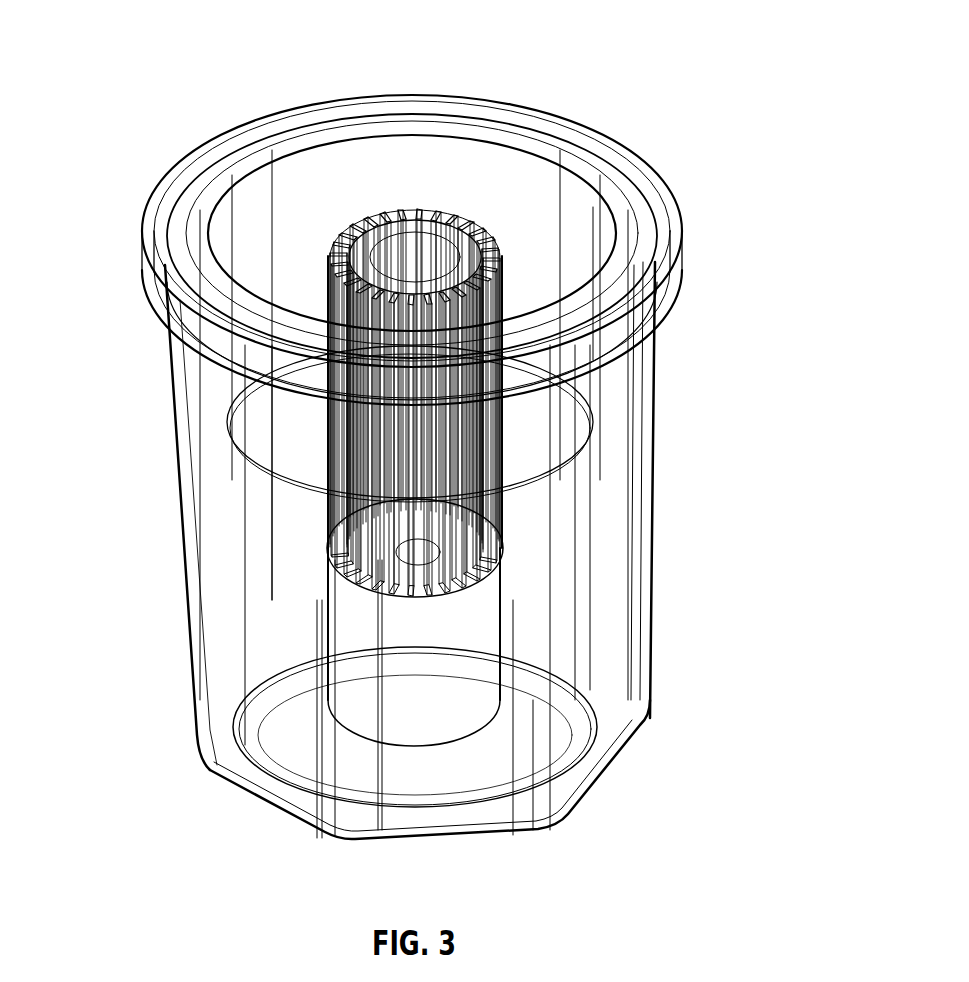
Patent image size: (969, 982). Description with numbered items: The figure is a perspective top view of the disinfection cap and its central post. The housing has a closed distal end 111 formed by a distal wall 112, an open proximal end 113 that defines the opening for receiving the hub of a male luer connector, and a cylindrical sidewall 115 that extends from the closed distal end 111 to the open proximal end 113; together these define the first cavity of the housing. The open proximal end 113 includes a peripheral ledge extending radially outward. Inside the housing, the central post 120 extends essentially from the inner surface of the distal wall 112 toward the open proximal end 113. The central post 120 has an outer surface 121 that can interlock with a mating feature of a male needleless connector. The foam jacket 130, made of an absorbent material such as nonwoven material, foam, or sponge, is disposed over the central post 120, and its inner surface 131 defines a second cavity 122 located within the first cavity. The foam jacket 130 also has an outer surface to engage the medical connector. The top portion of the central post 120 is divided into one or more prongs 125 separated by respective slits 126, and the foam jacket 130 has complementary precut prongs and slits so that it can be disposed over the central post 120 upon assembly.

The closed distal end 111 is at (212, 772).
The distal wall 112 is at (215, 727).
The open proximal end 113 is at (168, 205).
The sidewall 115 is at (183, 548).
The central post 120 is at (503, 648).
The outer surface 121 is at (450, 723).
The second cavity 122 is at (470, 262).
The prongs 125 is at (434, 205).
The slits 126 is at (392, 210).
The foam jacket 130 is at (327, 593).
The inner surface 131 is at (427, 275).